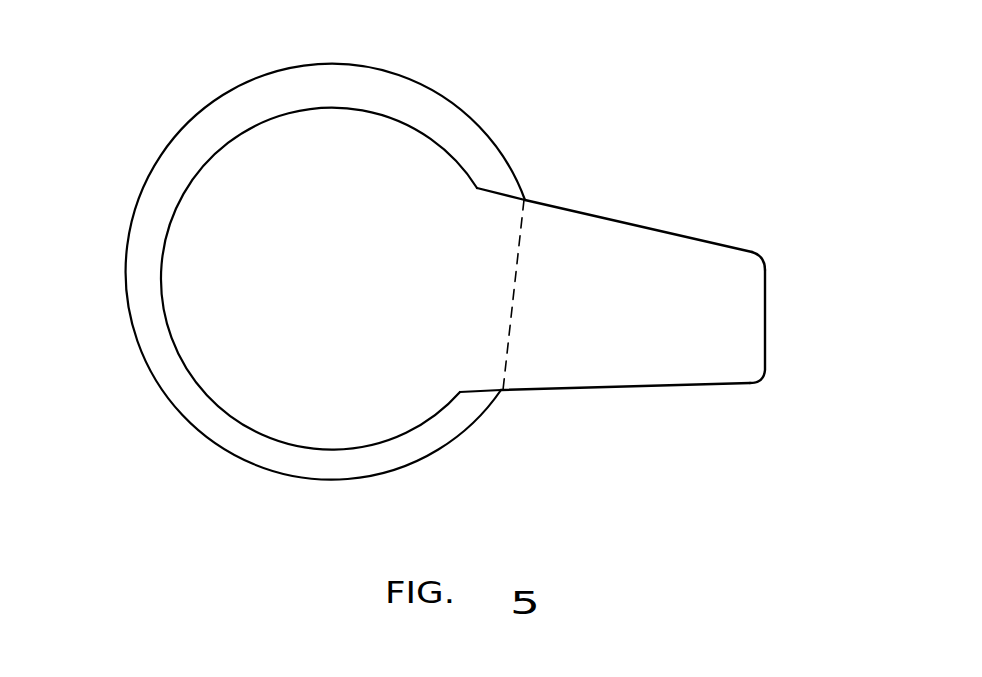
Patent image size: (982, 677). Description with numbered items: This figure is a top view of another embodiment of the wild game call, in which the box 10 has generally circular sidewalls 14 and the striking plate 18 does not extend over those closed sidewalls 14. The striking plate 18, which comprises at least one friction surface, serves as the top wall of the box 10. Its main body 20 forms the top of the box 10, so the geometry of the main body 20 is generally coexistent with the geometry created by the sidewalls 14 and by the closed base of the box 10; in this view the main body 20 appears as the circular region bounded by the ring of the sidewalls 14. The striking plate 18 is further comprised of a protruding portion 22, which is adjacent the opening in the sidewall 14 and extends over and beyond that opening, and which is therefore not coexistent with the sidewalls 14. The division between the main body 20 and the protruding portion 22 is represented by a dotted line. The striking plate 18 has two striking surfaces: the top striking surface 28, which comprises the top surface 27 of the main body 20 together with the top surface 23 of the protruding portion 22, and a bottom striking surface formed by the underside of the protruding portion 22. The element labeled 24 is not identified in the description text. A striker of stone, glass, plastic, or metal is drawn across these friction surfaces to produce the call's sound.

The box 10 is at (478, 266).
The sidewalls 14 is at (325, 266).
The striking plate 18 is at (558, 245).
The main body 20 is at (330, 297).
The protruding portion 22 is at (631, 237).
The top surface of protruding portion 23 is at (722, 270).
The end edge of extension 24 is at (765, 323).
The top surface of main body 27 is at (363, 193).
The top striking surface 28 is at (432, 243).